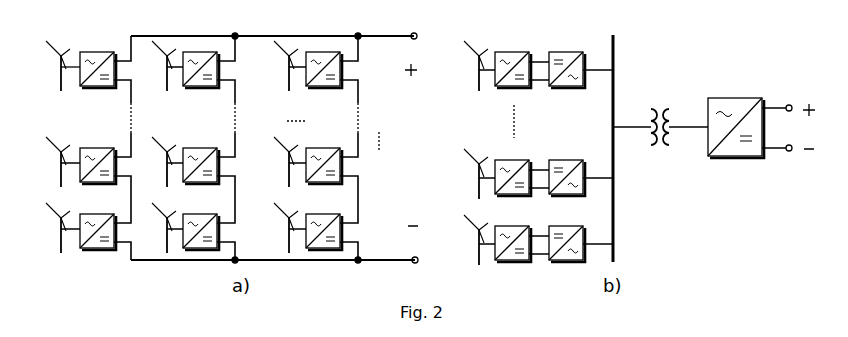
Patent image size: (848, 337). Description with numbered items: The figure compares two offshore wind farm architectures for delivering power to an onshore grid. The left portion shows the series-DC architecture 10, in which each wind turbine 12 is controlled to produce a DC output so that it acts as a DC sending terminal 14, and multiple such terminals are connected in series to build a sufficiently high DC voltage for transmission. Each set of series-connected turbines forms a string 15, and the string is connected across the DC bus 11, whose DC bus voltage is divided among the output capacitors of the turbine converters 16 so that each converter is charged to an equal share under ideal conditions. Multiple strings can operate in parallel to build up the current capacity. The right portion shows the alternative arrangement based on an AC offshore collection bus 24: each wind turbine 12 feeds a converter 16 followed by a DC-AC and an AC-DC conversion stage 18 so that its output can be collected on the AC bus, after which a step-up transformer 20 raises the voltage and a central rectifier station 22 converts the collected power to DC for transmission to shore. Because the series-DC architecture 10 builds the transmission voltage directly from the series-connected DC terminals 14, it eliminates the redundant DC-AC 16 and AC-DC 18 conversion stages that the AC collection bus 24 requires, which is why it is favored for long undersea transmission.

The series-DC architecture 10 is at (272, 121).
The DC bus 11 is at (410, 42).
The wind turbine 12 is at (59, 82).
The DC terminal 14 is at (107, 45).
The string 15 is at (136, 118).
The DC-AC converter 16 is at (101, 88).
The AC-DC converter 18 is at (560, 52).
The step-up transformer 20 is at (659, 150).
The central rectifier station 22 is at (731, 98).
The AC offshore collection bus 24 is at (616, 46).